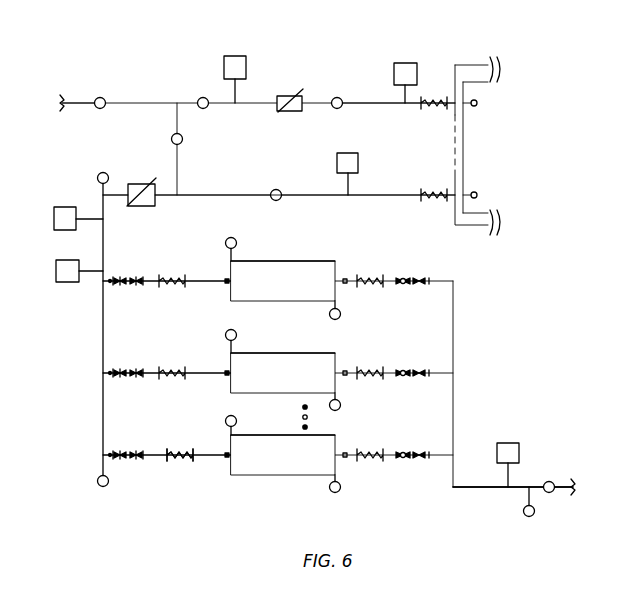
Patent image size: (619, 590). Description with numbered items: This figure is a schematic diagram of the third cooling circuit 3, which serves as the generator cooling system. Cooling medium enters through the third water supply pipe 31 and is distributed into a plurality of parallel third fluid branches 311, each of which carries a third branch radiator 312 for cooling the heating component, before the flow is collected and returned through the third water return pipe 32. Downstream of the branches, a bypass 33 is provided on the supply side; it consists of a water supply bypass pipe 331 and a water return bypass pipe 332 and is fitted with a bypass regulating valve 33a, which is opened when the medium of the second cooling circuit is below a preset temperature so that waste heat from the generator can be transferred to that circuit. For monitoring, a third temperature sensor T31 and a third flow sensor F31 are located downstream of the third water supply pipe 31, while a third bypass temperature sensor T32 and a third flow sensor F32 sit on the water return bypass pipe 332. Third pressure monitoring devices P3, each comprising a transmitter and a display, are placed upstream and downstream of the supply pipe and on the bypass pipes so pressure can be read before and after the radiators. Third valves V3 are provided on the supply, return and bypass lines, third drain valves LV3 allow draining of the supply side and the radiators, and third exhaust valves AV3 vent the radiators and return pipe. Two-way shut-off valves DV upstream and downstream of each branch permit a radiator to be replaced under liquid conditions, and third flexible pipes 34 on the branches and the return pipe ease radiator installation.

The third cooling circuit 3 is at (270, 45).
The third water supply pipe 31 is at (565, 487).
The third fluid branch 311 is at (210, 281).
The third branch radiator 312 is at (280, 270).
The third water return pipe 32 is at (73, 103).
The bypass 33 is at (371, 176).
The bypass regulating valve 33a is at (332, 97).
The water supply bypass pipe 331 is at (235, 195).
The water return bypass pipe 332 is at (377, 103).
The third flexible pipe 34 is at (180, 462).
The third valve V3 is at (94, 108).
The third exhaust valve AV3 is at (100, 172).
The third drain valve LV3 is at (108, 487).
The two-way shut-off valve DV is at (410, 278).
The third pressure monitoring device P3 is at (408, 95).
The third temperature sensor T31 is at (94, 218).
The third bypass temperature sensor T32 is at (231, 96).
The third flow sensor F31 is at (146, 202).
The third flow sensor F32 is at (290, 109).